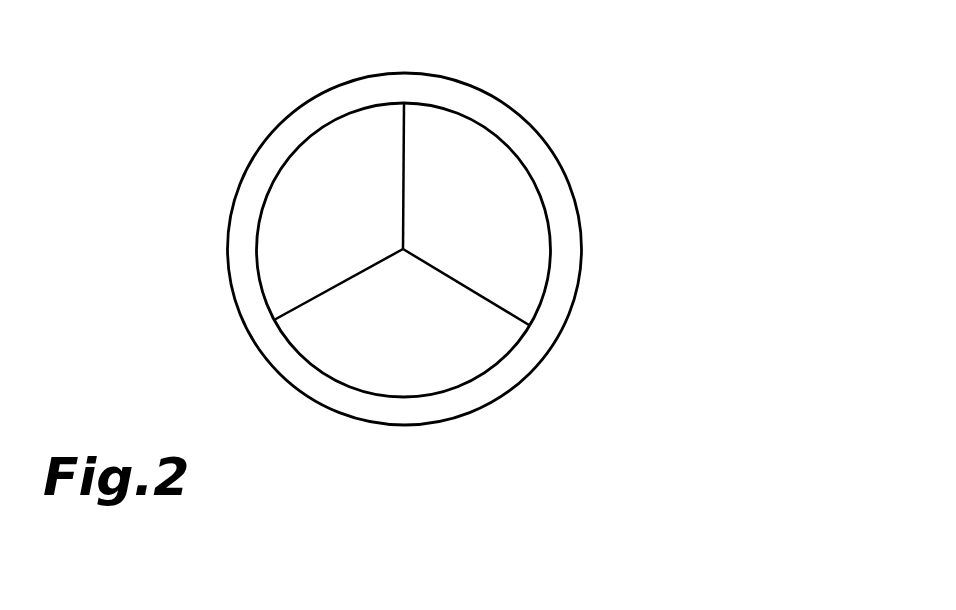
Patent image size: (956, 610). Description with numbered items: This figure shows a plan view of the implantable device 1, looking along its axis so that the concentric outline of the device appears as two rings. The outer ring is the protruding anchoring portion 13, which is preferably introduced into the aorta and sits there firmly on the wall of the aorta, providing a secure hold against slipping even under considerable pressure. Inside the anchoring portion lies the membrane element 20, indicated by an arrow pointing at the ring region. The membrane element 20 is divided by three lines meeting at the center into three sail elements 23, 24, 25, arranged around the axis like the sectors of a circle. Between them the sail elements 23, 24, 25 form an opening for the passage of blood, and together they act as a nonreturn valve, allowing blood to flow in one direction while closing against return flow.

The implantable device 1 is at (91, 33).
The anchoring portion 13 is at (243, 298).
The membrane element 20 is at (252, 237).
The sail element 23 is at (468, 345).
The sail element 24 is at (497, 185).
The sail element 25 is at (308, 177).